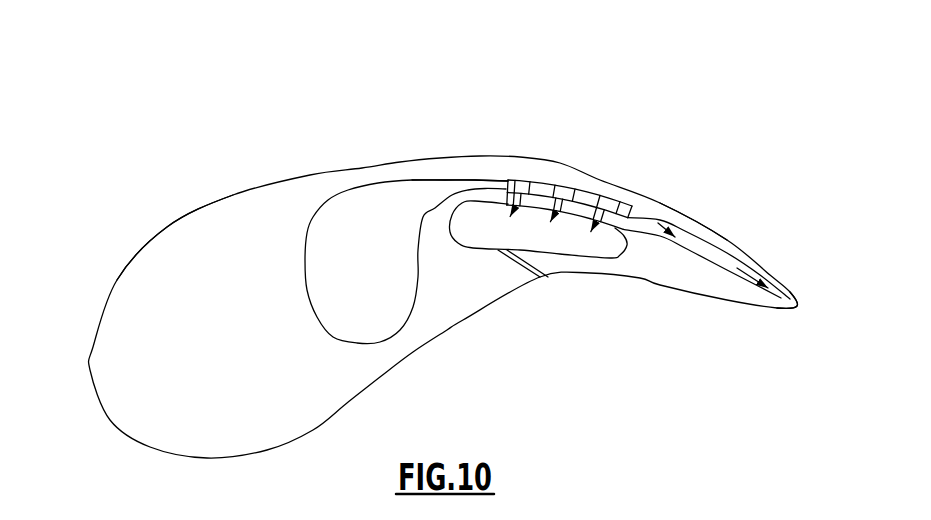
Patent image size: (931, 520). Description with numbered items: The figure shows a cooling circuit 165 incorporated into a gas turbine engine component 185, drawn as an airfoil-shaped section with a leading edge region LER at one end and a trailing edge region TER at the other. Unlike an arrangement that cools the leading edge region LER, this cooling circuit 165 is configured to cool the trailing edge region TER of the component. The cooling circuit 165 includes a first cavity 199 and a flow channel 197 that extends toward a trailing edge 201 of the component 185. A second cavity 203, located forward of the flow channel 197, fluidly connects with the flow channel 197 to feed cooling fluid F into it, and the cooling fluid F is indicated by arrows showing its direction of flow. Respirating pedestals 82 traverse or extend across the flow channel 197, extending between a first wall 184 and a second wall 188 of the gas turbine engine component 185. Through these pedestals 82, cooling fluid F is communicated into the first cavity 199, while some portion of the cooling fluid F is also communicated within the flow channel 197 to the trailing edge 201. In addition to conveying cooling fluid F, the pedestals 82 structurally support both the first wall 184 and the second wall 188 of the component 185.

The gas turbine engine component 185 is at (332, 107).
The flow channel 197 is at (485, 182).
The second cavity 203 is at (380, 273).
The cooling circuit 165 is at (550, 183).
The respirating pedestals 82 is at (527, 181).
The first wall 184 is at (638, 202).
The first cavity 199 is at (557, 237).
The second wall 188 is at (630, 232).
The trailing edge 201 is at (797, 310).
The leading edge region LER is at (108, 242).
The trailing edge region TER is at (713, 208).
The cooling fluid F is at (455, 187).